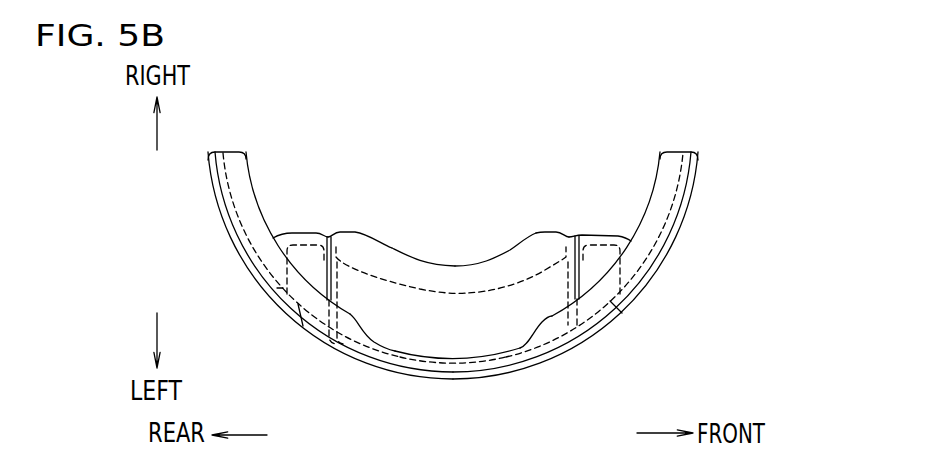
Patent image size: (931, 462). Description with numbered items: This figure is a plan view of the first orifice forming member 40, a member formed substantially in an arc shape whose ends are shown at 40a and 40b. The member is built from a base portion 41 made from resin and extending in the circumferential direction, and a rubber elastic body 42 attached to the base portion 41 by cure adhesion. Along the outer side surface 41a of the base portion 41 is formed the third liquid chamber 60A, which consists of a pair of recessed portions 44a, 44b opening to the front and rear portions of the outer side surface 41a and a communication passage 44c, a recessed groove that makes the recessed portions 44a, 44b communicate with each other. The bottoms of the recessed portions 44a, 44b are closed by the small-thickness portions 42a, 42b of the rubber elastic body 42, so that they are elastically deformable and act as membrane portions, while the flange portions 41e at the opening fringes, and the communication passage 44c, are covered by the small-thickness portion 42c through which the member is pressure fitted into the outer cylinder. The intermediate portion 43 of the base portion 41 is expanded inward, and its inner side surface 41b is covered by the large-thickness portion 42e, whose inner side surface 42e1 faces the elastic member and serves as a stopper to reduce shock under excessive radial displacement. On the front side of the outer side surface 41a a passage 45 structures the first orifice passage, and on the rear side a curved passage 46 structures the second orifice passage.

The first orifice forming member 40 is at (343, 132).
The front end portion 40a is at (677, 152).
The rear end portion 40b is at (227, 152).
The base portion 41 is at (523, 307).
The outer side surface 41a is at (282, 328).
The inner side surface 41b is at (467, 293).
The flange portion 41e is at (303, 326).
The rubber elastic body 42 is at (479, 252).
The small-thickness portion 42a is at (597, 233).
The small-thickness portion 42b is at (303, 233).
The small-thickness portion 42c is at (393, 372).
The large-thickness portion 42e is at (353, 231).
The inner side surface 42e1 is at (387, 244).
The intermediate portion 43 is at (546, 220).
The recessed portion 44a is at (588, 313).
The recessed portion 44b is at (315, 318).
The communication passage 44c is at (460, 366).
The passage 45 is at (674, 208).
The passage 46 is at (222, 208).
The third liquid chamber 60A is at (609, 330).